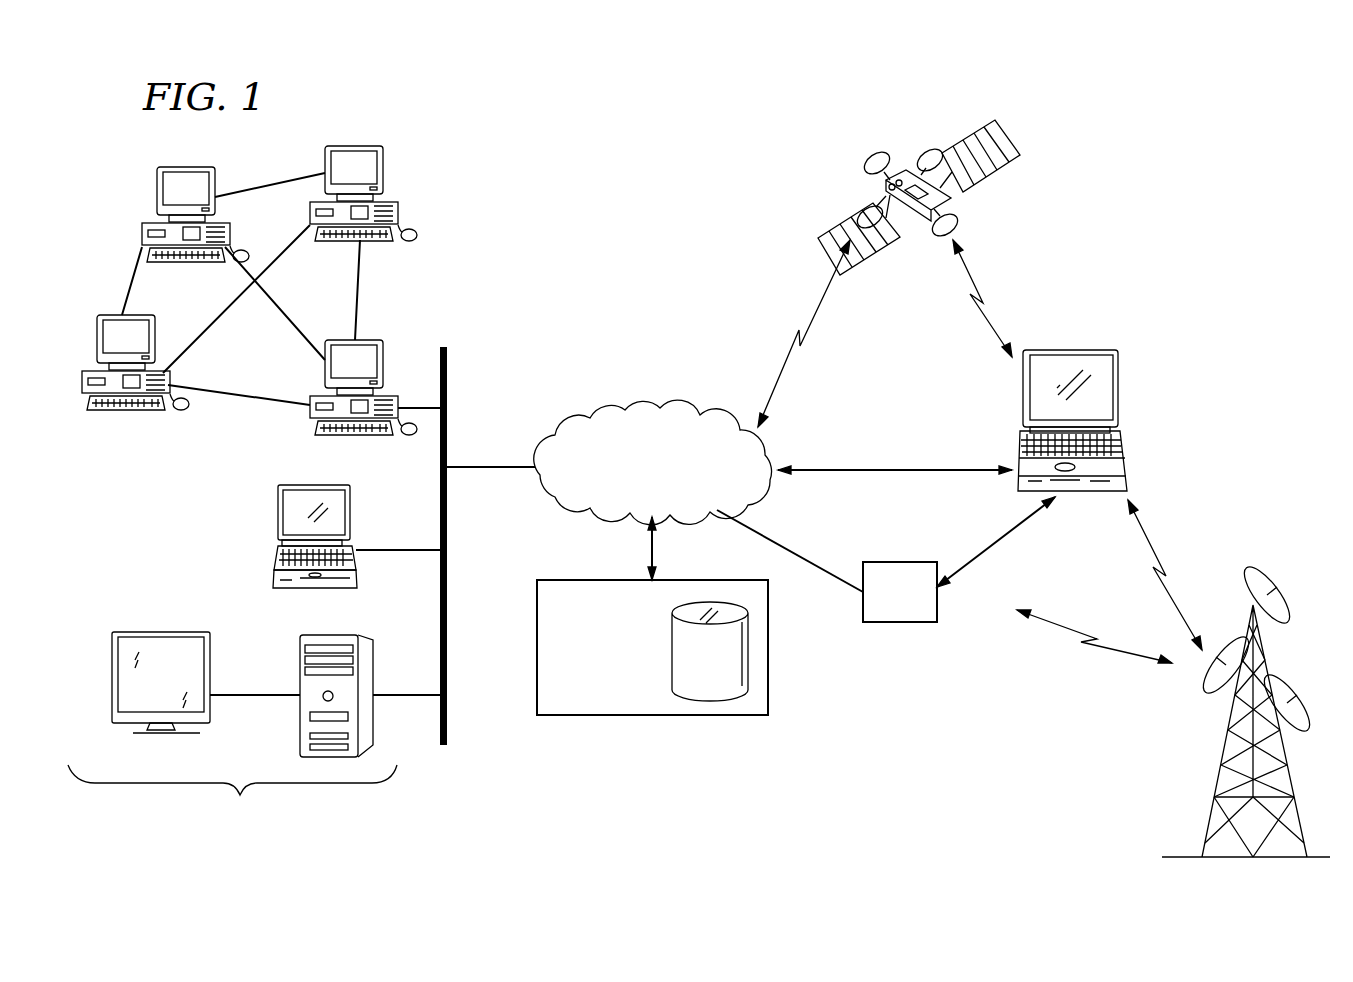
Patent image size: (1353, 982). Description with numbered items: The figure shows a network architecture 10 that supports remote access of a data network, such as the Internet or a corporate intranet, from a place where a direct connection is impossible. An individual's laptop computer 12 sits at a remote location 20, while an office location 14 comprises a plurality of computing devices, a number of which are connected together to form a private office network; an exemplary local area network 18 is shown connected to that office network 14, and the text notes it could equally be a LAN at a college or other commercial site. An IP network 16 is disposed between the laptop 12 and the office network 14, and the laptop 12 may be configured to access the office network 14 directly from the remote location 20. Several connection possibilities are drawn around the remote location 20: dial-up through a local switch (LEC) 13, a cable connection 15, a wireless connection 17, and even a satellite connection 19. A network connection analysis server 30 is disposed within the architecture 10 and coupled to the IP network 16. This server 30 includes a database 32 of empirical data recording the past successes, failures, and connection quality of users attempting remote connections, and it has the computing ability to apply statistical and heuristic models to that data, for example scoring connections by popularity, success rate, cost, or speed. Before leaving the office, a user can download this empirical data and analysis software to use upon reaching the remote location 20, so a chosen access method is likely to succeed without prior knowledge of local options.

The network architecture 10 is at (620, 207).
The laptop computer 12 is at (1098, 350).
The local switch (LEC) 13 is at (897, 622).
The office location 14 is at (240, 795).
The cable connection 15 is at (890, 468).
The IP network 16 is at (658, 405).
The wireless connection 17 is at (1163, 552).
The local area network (LAN) 18 is at (447, 377).
The satellite connection 19 is at (975, 273).
The remote location 20 is at (1085, 235).
The network connection analysis server 30 is at (597, 715).
The database 32 is at (712, 690).